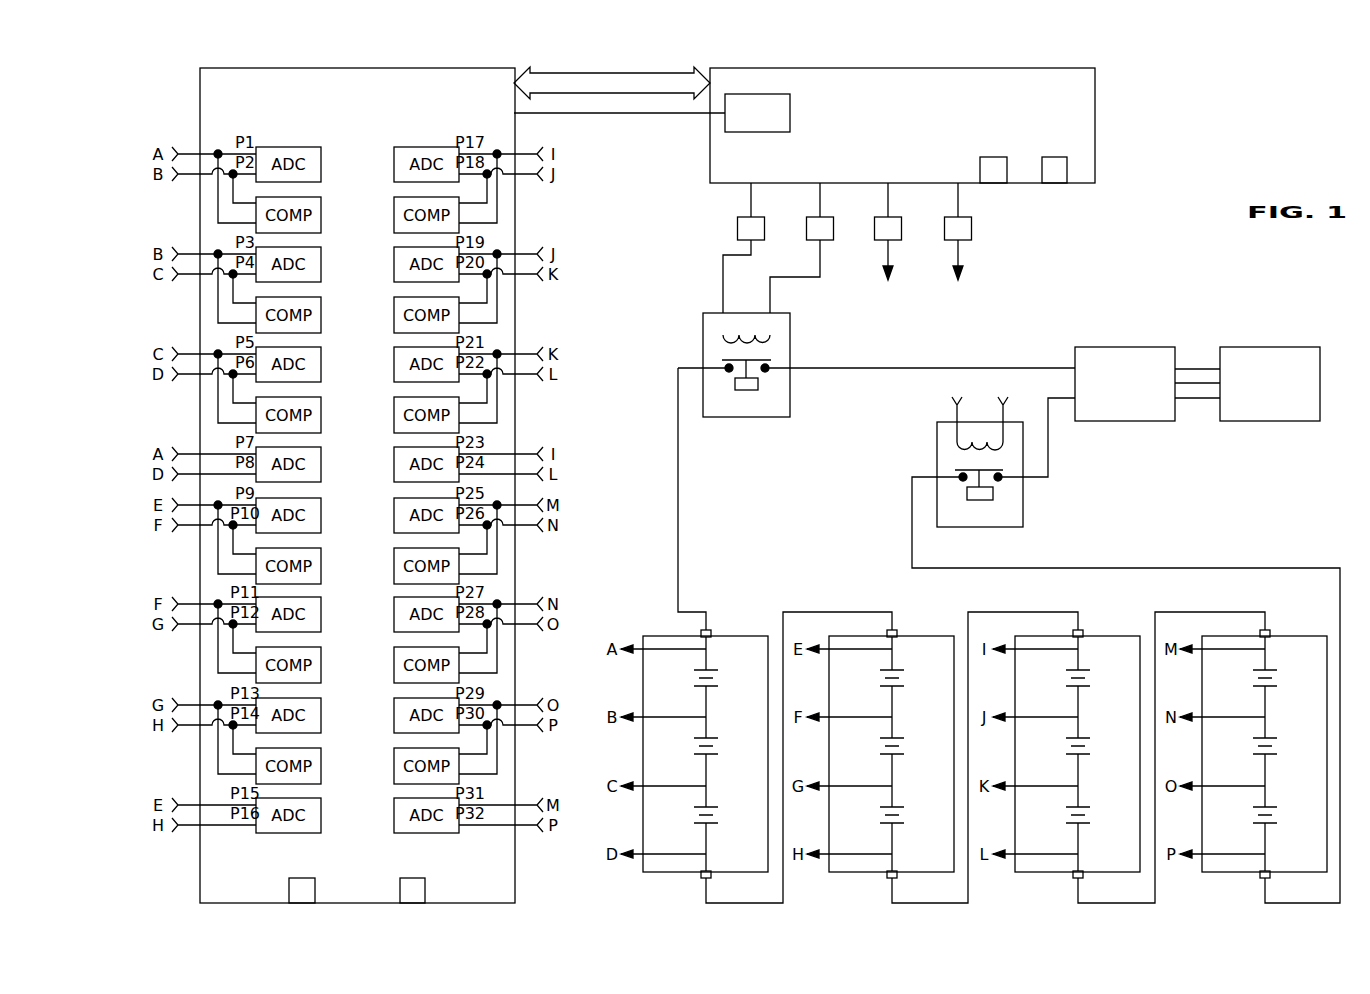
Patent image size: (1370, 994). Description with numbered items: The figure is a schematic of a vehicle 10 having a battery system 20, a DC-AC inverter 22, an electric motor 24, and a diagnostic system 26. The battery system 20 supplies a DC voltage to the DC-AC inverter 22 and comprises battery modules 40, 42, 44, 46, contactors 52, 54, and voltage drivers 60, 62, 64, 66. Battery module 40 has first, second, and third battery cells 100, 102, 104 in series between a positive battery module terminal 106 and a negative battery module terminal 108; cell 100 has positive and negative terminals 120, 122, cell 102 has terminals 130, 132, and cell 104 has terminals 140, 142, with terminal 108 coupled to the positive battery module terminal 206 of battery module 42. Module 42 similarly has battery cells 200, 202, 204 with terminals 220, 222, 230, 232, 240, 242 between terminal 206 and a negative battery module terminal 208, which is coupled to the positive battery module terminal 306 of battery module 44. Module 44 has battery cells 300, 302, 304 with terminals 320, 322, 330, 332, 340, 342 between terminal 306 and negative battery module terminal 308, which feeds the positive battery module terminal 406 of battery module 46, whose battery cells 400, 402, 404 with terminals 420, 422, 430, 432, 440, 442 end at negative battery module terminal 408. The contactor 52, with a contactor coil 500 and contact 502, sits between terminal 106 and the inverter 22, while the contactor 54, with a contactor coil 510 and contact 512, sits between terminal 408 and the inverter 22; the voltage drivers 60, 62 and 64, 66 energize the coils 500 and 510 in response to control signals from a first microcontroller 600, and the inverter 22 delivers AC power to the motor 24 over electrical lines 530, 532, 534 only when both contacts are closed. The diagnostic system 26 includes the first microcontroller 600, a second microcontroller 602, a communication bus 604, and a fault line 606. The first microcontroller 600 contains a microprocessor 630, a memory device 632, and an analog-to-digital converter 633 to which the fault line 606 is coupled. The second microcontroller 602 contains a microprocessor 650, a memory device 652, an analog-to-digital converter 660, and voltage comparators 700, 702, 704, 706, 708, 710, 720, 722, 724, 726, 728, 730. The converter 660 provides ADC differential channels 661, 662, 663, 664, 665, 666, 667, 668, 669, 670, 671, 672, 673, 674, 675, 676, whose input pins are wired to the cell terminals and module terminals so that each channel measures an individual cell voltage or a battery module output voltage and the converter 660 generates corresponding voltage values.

The vehicle 10 is at (1169, 190).
The battery system 20 is at (938, 356).
The DC-AC inverter 22 is at (1122, 347).
The electric motor 24 is at (1270, 347).
The diagnostic system 26 is at (704, 62).
The battery module 40 is at (743, 636).
The battery module 42 is at (891, 728).
The battery module 44 is at (1077, 728).
The battery module 46 is at (1264, 728).
The contactor 52 is at (800, 346).
The contactor 54 is at (1016, 407).
The voltage driver 60 is at (765, 229).
The voltage driver 62 is at (834, 229).
The voltage driver 64 is at (902, 229).
The voltage driver 66 is at (972, 229).
The first battery cell 100 is at (726, 677).
The second battery cell 102 is at (726, 745).
The third battery cell 104 is at (726, 814).
The positive battery module terminal 106 is at (712, 630).
The negative battery module terminal 108 is at (701, 877).
The positive terminal 120 is at (710, 661).
The negative terminal 122 is at (707, 694).
The positive terminal 130 is at (710, 729).
The negative terminal 132 is at (707, 762).
The positive terminal 140 is at (710, 798).
The negative terminal 142 is at (707, 831).
The first battery cell 200 is at (918, 674).
The second battery cell 202 is at (918, 742).
The third battery cell 204 is at (918, 811).
The positive battery module terminal 206 is at (892, 605).
The negative battery module terminal 208 is at (862, 887).
The positive terminal 220 is at (918, 650).
The negative terminal 222 is at (925, 694).
The positive terminal 230 is at (918, 718).
The negative terminal 232 is at (925, 762).
The positive terminal 240 is at (918, 787).
The negative terminal 242 is at (925, 831).
The first battery cell 300 is at (1104, 674).
The second battery cell 302 is at (1104, 742).
The third battery cell 304 is at (1104, 811).
The positive battery module terminal 306 is at (1078, 605).
The negative battery module terminal 308 is at (1048, 887).
The positive terminal 320 is at (1104, 650).
The negative terminal 322 is at (1111, 694).
The positive terminal 330 is at (1104, 718).
The negative terminal 332 is at (1111, 762).
The positive terminal 340 is at (1104, 787).
The negative terminal 342 is at (1111, 831).
The first battery cell 400 is at (1291, 674).
The second battery cell 402 is at (1291, 742).
The third battery cell 404 is at (1291, 811).
The positive battery module terminal 406 is at (1265, 605).
The negative battery module terminal 408 is at (1235, 887).
The positive terminal 420 is at (1291, 650).
The negative terminal 422 is at (1298, 694).
The positive terminal 430 is at (1291, 718).
The negative terminal 432 is at (1298, 762).
The positive terminal 440 is at (1291, 787).
The negative terminal 442 is at (1298, 831).
The contactor coil 500 is at (723, 342).
The contact 502 is at (722, 360).
The contactor coil 510 is at (957, 448).
The contact 512 is at (955, 470).
The electrical line 530 is at (1194, 369).
The electrical line 532 is at (1186, 383).
The electrical line 534 is at (1205, 398).
The first microcontroller 600 is at (1095, 122).
The second microcontroller 602 is at (375, 68).
The communication bus 604 is at (612, 72).
The fault line 606 is at (586, 116).
The microprocessor 630 is at (990, 166).
The memory device 632 is at (1052, 166).
The analog-to-digital converter 633 is at (756, 132).
The microprocessor 650 is at (315, 890).
The memory device 652 is at (425, 890).
The analog-to-digital converter 660 is at (273, 147).
The ADC differential channel 661 is at (321, 173).
The ADC differential channel 662 is at (311, 261).
The ADC differential channel 663 is at (311, 361).
The ADC differential channel 664 is at (311, 461).
The ADC differential channel 665 is at (311, 512).
The ADC differential channel 666 is at (311, 611).
The ADC differential channel 667 is at (311, 712).
The ADC differential channel 668 is at (311, 812).
The ADC differential channel 669 is at (394, 155).
The ADC differential channel 670 is at (408, 249).
The ADC differential channel 671 is at (408, 349).
The ADC differential channel 672 is at (408, 449).
The ADC differential channel 673 is at (408, 500).
The ADC differential channel 674 is at (408, 599).
The ADC differential channel 675 is at (408, 700).
The ADC differential channel 676 is at (408, 800).
The voltage comparator 700 is at (321, 223).
The voltage comparator 702 is at (311, 311).
The voltage comparator 704 is at (311, 411).
The voltage comparator 706 is at (311, 562).
The voltage comparator 708 is at (311, 661).
The voltage comparator 710 is at (311, 762).
The voltage comparator 720 is at (394, 207).
The voltage comparator 722 is at (410, 300).
The voltage comparator 724 is at (410, 400).
The voltage comparator 726 is at (410, 551).
The voltage comparator 728 is at (410, 650).
The voltage comparator 730 is at (410, 751).